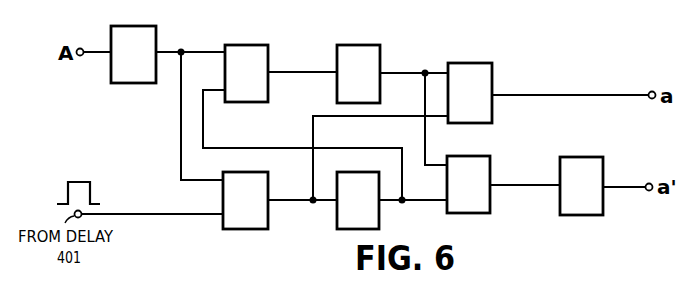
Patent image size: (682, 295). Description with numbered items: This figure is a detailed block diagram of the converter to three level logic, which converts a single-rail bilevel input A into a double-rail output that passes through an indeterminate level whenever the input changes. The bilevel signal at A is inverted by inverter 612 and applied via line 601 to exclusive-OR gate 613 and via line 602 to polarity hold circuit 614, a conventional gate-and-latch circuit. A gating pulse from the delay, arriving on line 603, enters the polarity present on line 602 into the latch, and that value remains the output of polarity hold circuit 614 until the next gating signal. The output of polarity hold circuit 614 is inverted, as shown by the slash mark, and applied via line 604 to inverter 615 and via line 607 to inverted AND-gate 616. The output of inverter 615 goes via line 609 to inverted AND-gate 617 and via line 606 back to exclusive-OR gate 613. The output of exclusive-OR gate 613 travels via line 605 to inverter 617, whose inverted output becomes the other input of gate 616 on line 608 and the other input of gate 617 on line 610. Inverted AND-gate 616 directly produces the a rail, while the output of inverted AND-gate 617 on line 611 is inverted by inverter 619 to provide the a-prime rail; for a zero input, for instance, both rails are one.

The line 601 is at (189, 56).
The line 602 is at (181, 149).
The line 603 is at (127, 215).
The line 604 is at (295, 201).
The line 605 is at (291, 72).
The line 606 is at (239, 148).
The line 607 is at (346, 116).
The line 608 is at (391, 72).
The line 609 is at (418, 201).
The line 610 is at (425, 137).
The line 611 is at (510, 186).
The inverter 612 is at (126, 30).
The exclusive-OR gate 613 is at (240, 47).
The polarity hold circuit 614 is at (253, 228).
The inverter 615 is at (352, 228).
The inverted AND-gate 616 is at (462, 68).
The inverter / inverted AND-gate 617 is at (348, 47).
The inverter 619 is at (574, 164).